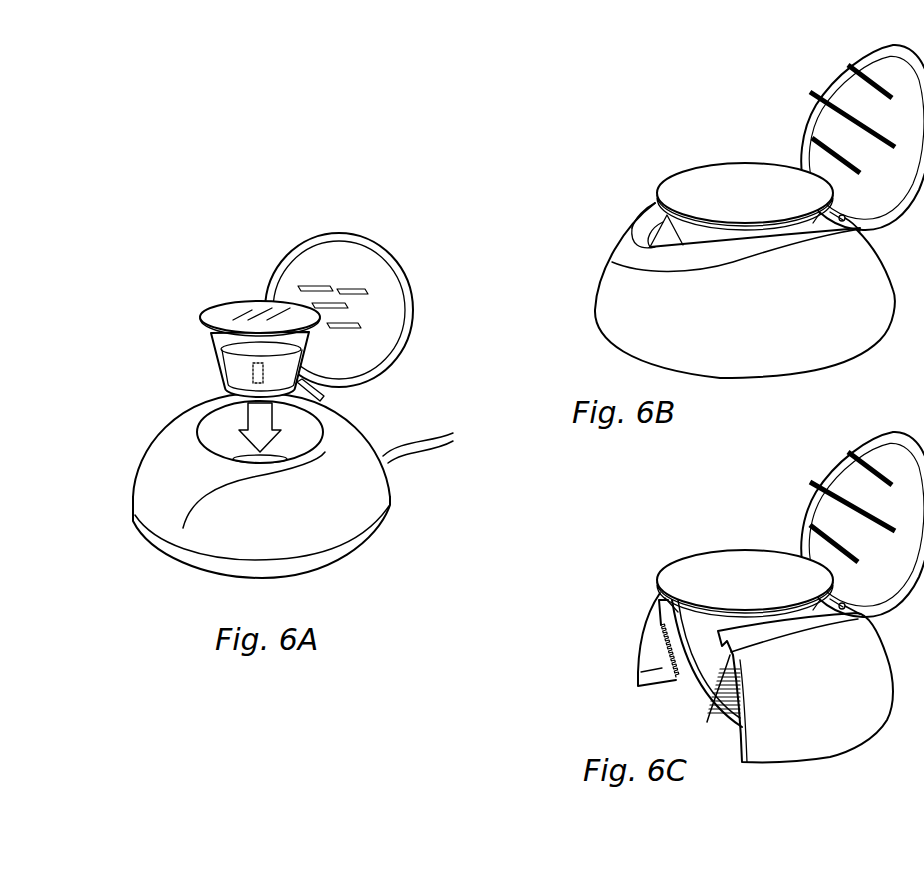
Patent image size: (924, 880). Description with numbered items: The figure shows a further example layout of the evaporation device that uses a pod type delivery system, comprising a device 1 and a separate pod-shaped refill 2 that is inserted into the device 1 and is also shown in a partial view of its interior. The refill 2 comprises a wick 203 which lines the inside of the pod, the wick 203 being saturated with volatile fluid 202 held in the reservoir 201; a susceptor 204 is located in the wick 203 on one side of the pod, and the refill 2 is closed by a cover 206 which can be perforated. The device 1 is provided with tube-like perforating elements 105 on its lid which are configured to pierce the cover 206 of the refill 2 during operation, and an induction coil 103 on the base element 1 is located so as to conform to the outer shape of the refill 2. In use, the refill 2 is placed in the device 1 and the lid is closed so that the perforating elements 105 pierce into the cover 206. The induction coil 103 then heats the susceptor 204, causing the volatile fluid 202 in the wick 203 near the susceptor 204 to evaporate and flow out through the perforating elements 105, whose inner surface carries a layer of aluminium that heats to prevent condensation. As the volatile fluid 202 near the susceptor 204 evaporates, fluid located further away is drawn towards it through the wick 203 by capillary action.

In FIG. 6B, the device 1 is at (880, 315).
In FIG. 6A, the refill 2 is at (280, 327).
In FIG. 6B, the refill 2 is at (678, 173).
In FIG. 6C, the refill 2 is at (692, 620).
In FIG. 6C, the induction coil 103 is at (650, 647).
In FIG. 6B, the perforating elements 105 is at (817, 92).
In FIG. 6B, the reservoir 201 is at (632, 230).
In FIG. 6A, the volatile fluid 202 is at (290, 365).
In FIG. 6A, the wick 203 is at (220, 357).
In FIG. 6A, the susceptor 204 is at (253, 368).
In FIG. 6B, the cover 206 is at (730, 175).